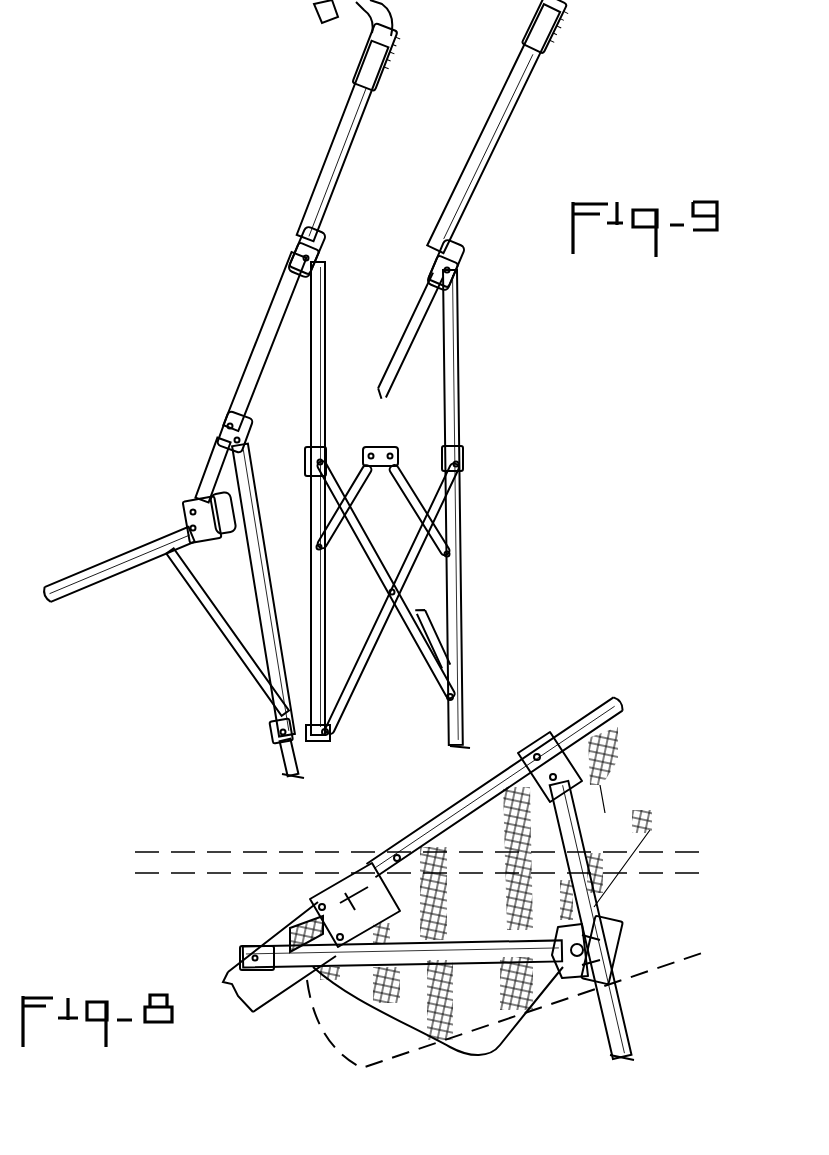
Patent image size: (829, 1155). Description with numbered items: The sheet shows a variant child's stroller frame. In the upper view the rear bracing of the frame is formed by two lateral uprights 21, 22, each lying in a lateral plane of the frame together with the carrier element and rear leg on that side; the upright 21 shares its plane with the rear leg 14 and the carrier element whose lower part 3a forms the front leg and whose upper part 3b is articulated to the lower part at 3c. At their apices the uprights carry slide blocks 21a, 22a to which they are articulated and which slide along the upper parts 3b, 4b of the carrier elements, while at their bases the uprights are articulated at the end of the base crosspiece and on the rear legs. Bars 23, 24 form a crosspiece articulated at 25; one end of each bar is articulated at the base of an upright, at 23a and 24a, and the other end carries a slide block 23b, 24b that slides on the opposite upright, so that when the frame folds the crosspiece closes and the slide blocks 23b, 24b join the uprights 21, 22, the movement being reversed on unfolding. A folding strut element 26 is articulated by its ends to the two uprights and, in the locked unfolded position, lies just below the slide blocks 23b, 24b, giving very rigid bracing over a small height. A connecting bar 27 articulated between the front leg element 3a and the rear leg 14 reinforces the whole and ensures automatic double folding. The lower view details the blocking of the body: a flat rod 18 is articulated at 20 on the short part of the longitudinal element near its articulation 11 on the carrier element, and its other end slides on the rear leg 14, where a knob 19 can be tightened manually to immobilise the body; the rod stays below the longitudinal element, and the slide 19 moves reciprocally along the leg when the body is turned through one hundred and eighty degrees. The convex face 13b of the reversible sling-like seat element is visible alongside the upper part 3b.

In FIG. 9, the lower part of carrier element 3a is at (105, 566).
In FIG. 9, the upper part of carrier element 3b is at (348, 122).
In FIG. 8, the upper part of carrier element 3b is at (612, 717).
In FIG. 8, the articulation of carrier element 3c is at (323, 904).
In FIG. 9, the upper part of carrier element 4b is at (500, 106).
In FIG. 8, the articulation 11 is at (397, 855).
In FIG. 8, the convex face of seat element 13b is at (415, 1005).
In FIG. 9, the rear leg 14 is at (261, 580).
In FIG. 8, the rear leg 14 is at (599, 903).
In FIG. 8, the rod 18 is at (363, 958).
In FIG. 8, the knob 19 is at (568, 978).
In FIG. 8, the articulation of the rod 20 is at (250, 948).
In FIG. 9, the lateral upright 21 is at (322, 318).
In FIG. 9, the slide block 21a is at (299, 241).
In FIG. 9, the lateral upright 22 is at (458, 342).
In FIG. 9, the slide block 22a is at (438, 253).
In FIG. 9, the bar 23 is at (352, 682).
In FIG. 9, the base articulation of bar 23a is at (330, 733).
In FIG. 9, the slide block 23b is at (466, 455).
In FIG. 9, the bar 24 is at (434, 683).
In FIG. 9, the base articulation of bar 24a is at (455, 696).
In FIG. 9, the slide block 24b is at (312, 462).
In FIG. 9, the crosspiece articulation 25 is at (392, 593).
In FIG. 9, the folding strut element 26 is at (380, 447).
In FIG. 9, the connecting bar 27 is at (228, 640).